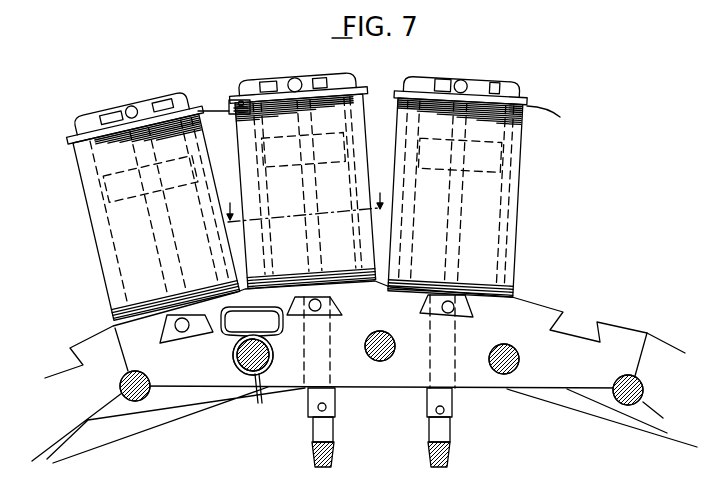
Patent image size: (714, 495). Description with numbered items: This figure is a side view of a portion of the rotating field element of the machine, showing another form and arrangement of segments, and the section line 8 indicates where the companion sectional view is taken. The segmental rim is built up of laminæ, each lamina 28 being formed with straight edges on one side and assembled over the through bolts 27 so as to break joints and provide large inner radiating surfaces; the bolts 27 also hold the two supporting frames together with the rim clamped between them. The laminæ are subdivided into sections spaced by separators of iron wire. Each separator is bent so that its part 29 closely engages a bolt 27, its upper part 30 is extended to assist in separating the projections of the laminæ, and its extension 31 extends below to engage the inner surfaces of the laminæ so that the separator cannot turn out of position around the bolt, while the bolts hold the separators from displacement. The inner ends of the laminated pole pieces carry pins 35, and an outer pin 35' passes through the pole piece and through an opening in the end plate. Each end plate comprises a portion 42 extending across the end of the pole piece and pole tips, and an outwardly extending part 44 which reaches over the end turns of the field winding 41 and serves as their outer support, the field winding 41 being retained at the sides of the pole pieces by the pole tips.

The field winding 41 is at (102, 168).
The end plate portion 42 is at (95, 112).
The outer pin 35' is at (295, 98).
The outwardly extending part 44 is at (250, 94).
The section line 8— 8 is at (306, 216).
The lamina 28 is at (364, 372).
The pin 35 is at (338, 381).
The separator upper part 30 is at (268, 310).
The separator bolt-engaging part 29 is at (235, 364).
The separator extension 31 is at (258, 404).
The through bolts 27 is at (138, 400).